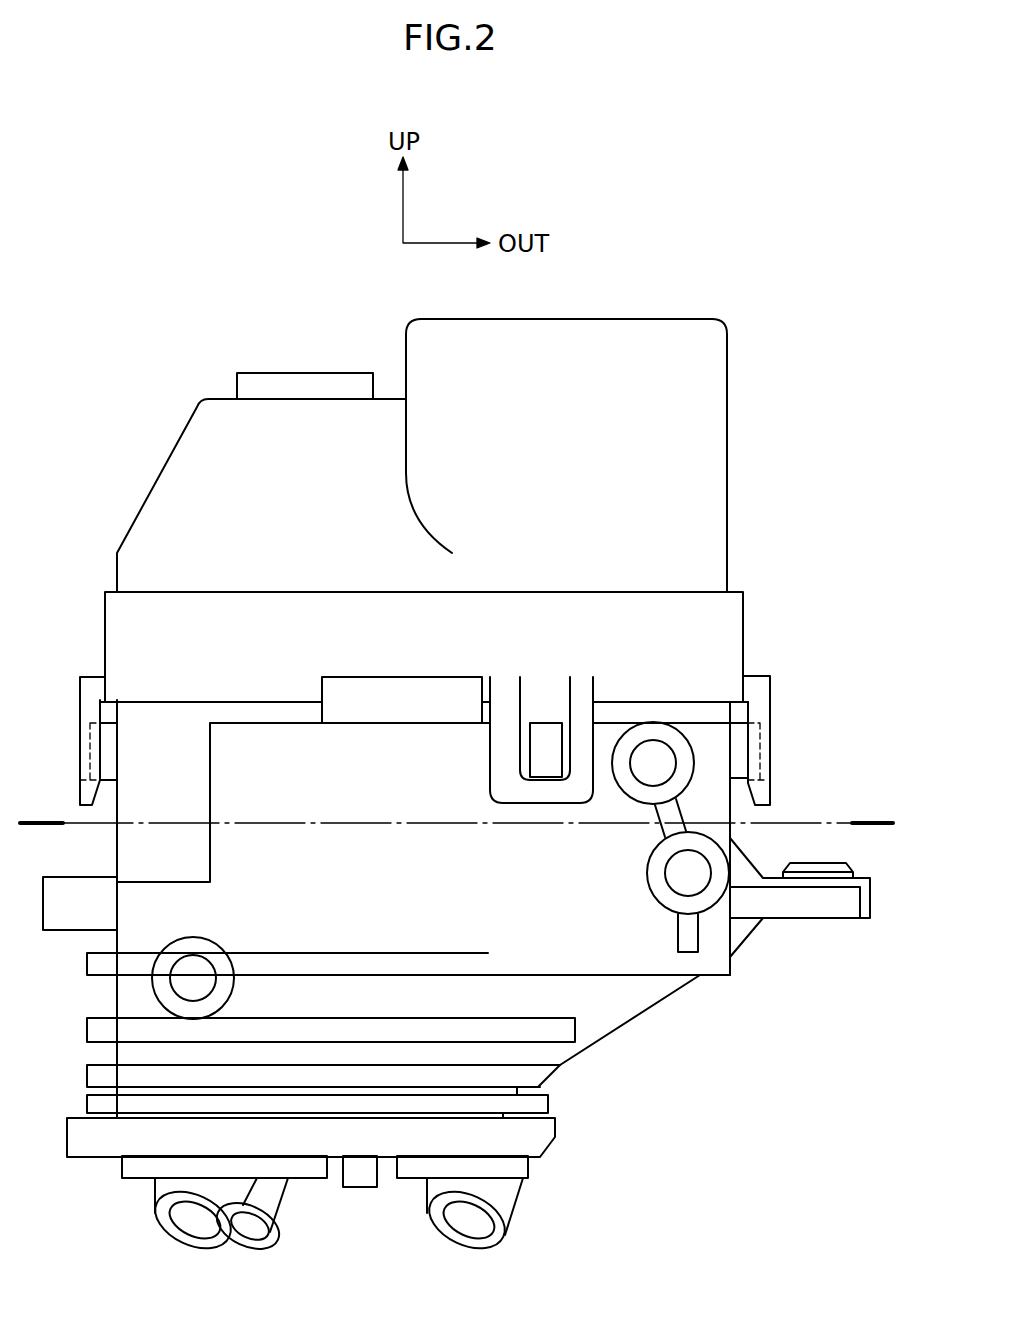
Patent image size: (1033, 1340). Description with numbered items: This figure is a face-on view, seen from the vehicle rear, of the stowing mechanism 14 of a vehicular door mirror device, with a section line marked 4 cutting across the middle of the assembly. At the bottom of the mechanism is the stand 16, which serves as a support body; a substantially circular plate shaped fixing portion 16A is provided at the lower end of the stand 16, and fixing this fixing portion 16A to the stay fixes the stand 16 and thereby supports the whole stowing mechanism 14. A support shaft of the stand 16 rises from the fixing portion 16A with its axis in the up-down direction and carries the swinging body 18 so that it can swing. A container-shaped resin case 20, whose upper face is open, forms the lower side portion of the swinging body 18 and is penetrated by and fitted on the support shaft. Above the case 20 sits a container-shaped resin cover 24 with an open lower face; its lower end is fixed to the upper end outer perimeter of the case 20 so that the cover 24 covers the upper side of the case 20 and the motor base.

The stowing mechanism 14 is at (128, 307).
The swinging body 18 is at (157, 473).
The cover 24 is at (727, 433).
The case 20 is at (117, 856).
The stand 16 is at (398, 1106).
The fixing portion 16A is at (555, 1125).
The section line 4- 4 is at (873, 821).